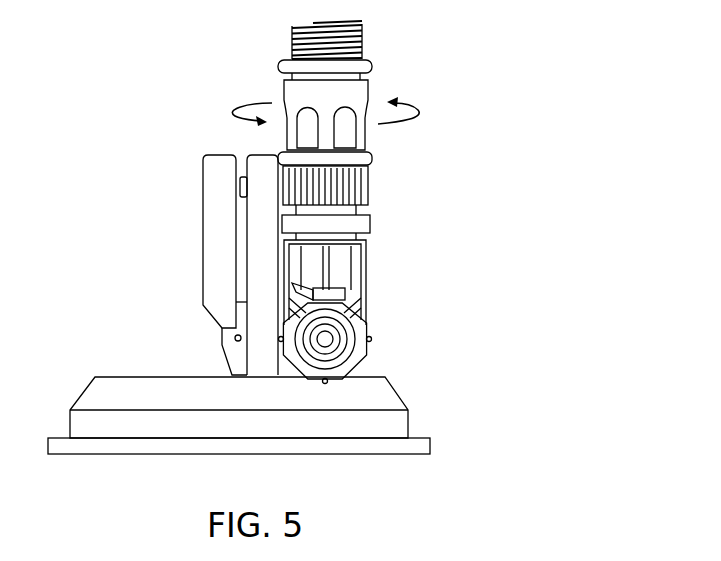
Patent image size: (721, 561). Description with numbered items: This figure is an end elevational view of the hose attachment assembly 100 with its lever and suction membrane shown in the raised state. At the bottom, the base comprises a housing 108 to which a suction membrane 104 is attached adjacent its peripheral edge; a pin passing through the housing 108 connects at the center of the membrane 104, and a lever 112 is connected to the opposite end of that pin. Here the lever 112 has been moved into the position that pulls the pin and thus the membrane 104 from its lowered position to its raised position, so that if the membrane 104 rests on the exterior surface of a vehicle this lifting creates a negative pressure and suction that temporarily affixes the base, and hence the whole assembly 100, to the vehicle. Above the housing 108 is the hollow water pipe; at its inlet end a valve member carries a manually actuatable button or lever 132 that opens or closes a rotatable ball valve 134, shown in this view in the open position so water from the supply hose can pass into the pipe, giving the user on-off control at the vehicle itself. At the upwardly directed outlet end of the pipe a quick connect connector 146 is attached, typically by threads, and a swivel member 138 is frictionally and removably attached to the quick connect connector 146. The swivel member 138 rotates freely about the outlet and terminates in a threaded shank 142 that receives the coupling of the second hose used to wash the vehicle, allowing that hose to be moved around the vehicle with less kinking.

The assembly 100 is at (153, 153).
The suction membrane 104 is at (125, 450).
The housing 108 is at (96, 390).
The lever 112 is at (215, 247).
The manually actuatable button or lever 132 is at (296, 287).
The ball valve 134 is at (327, 340).
The swivel member 138 is at (363, 102).
The threaded shank 142 is at (297, 44).
The quick connect connector 146 is at (368, 186).